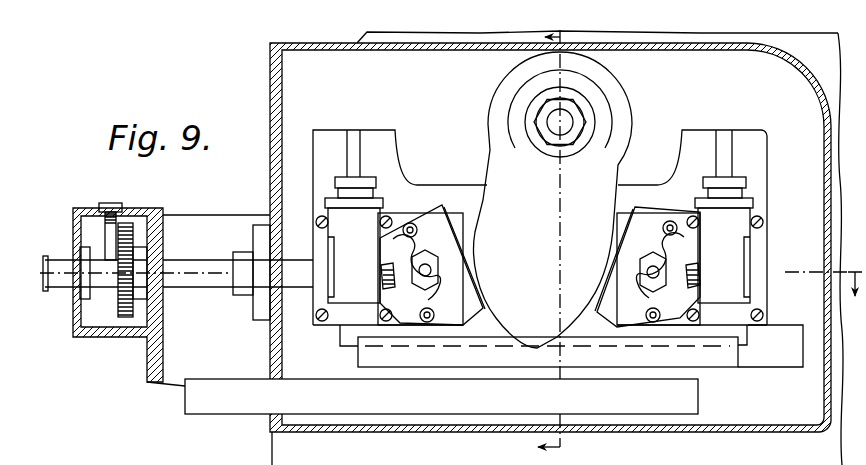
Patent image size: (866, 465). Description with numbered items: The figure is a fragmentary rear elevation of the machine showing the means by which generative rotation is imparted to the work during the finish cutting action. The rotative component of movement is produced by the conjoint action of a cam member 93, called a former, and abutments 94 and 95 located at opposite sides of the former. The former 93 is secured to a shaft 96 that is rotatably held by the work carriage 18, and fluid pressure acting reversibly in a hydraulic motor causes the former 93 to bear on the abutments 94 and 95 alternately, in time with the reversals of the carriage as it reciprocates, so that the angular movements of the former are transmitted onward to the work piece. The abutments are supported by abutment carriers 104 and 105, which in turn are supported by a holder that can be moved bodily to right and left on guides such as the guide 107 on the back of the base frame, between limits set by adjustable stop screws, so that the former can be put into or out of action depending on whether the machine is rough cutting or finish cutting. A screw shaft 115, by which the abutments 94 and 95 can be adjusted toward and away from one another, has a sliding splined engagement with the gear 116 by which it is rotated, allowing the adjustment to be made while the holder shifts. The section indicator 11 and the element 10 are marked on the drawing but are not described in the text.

The drive shaft 10 is at (134, 268).
The section line 11 is at (700, 247).
The work carriage 18 is at (833, 88).
The cam member 93 is at (531, 303).
The abutment 94 is at (461, 200).
The abutment 95 is at (628, 198).
The shaft 96 is at (557, 128).
The abutment carrier 104 is at (388, 167).
The abutment carrier 105 is at (688, 141).
The guide 107 is at (683, 401).
The screw shaft 115 is at (202, 268).
The gear 116 is at (128, 322).